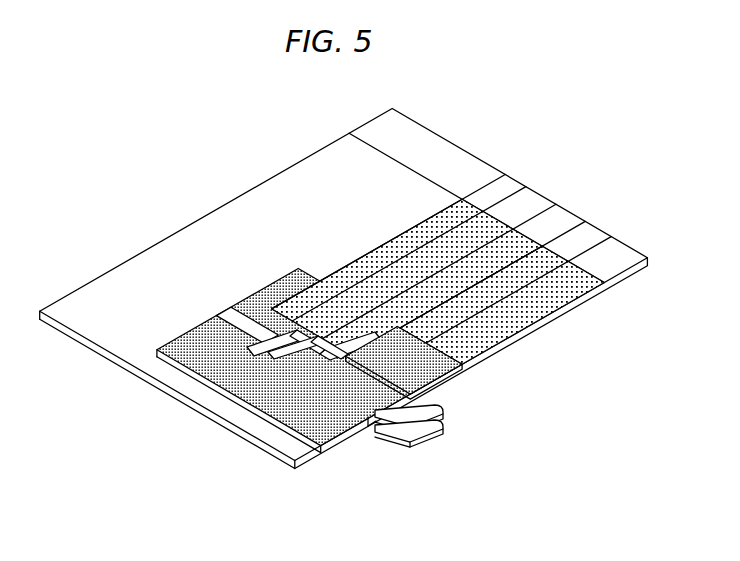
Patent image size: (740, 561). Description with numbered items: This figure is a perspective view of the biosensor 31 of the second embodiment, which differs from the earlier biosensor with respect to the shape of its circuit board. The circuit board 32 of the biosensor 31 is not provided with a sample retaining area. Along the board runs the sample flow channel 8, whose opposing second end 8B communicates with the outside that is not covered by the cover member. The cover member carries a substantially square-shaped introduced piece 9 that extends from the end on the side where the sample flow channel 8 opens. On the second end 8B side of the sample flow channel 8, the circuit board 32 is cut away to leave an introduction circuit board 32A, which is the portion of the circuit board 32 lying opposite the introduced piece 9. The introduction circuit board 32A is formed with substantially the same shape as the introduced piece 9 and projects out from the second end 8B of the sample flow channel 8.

The biosensor 31 is at (175, 190).
The circuit board 32 is at (267, 435).
The sample flow channel 8 is at (360, 393).
The second end 8B is at (372, 420).
The introduced piece 9 is at (445, 405).
The introduction circuit board 32A is at (425, 437).